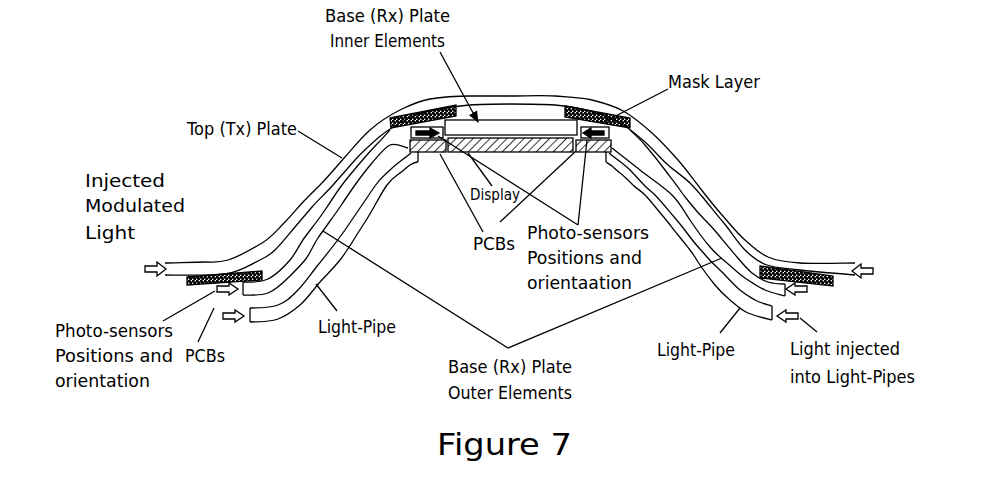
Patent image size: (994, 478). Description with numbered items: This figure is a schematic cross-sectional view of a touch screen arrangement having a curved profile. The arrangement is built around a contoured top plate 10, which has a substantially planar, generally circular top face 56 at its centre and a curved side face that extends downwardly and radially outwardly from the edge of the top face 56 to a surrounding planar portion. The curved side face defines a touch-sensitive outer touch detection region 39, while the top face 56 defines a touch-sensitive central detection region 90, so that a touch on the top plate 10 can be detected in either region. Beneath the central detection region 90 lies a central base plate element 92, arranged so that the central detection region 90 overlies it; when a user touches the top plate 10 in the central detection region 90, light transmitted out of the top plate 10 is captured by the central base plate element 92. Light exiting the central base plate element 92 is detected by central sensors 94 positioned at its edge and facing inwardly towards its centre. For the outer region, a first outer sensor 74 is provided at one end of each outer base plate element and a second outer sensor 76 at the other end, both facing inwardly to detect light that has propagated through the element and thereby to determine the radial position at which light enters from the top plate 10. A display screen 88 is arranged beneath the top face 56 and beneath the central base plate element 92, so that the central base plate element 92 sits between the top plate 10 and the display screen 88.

The central detection region 90 is at (515, 76).
The top plate 10 is at (782, 263).
The outer touch detection region 39 is at (291, 193).
The top face 56 is at (527, 93).
The first outer sensor 74 is at (420, 114).
The second outer sensor 76 is at (219, 283).
The central base plate element 92 is at (545, 125).
The display screen 88 is at (455, 155).
The central sensor 94 is at (442, 153).